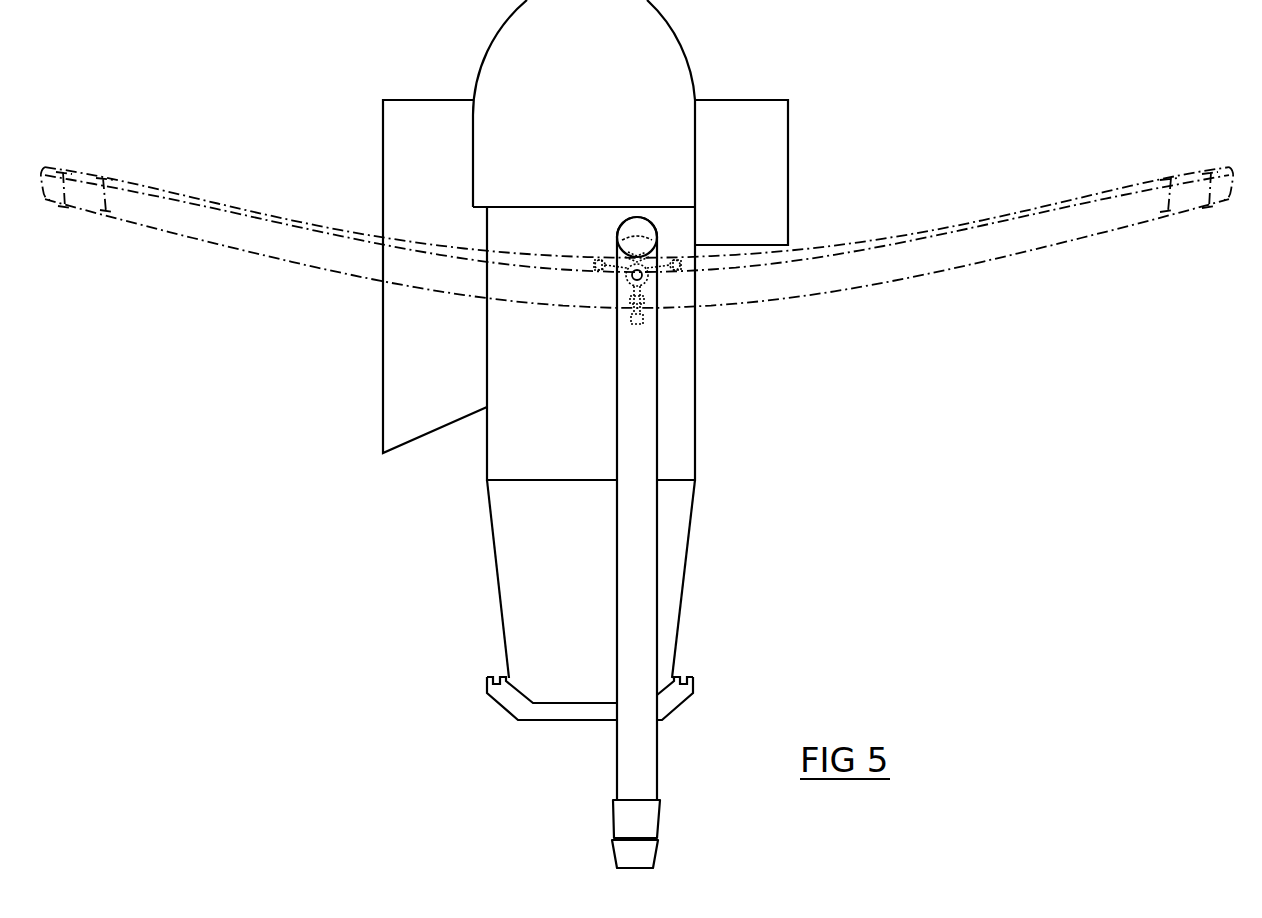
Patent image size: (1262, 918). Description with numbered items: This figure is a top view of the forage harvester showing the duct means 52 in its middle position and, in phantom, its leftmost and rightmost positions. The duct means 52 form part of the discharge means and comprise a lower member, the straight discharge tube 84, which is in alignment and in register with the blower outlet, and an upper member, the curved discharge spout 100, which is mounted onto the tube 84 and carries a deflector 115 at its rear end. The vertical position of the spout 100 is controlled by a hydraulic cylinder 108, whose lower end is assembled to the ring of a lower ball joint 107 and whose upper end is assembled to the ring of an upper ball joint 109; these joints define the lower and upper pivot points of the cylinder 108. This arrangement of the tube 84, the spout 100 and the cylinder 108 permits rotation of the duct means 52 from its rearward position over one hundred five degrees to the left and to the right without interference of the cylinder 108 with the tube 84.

The duct means 52 is at (673, 524).
The discharge tube 84 is at (640, 231).
The discharge spout 100 is at (642, 768).
The lower ball joint 107 is at (624, 268).
The hydraulic cylinder 108 is at (635, 290).
The upper ball joint 109 is at (643, 318).
The deflector 115 is at (665, 851).